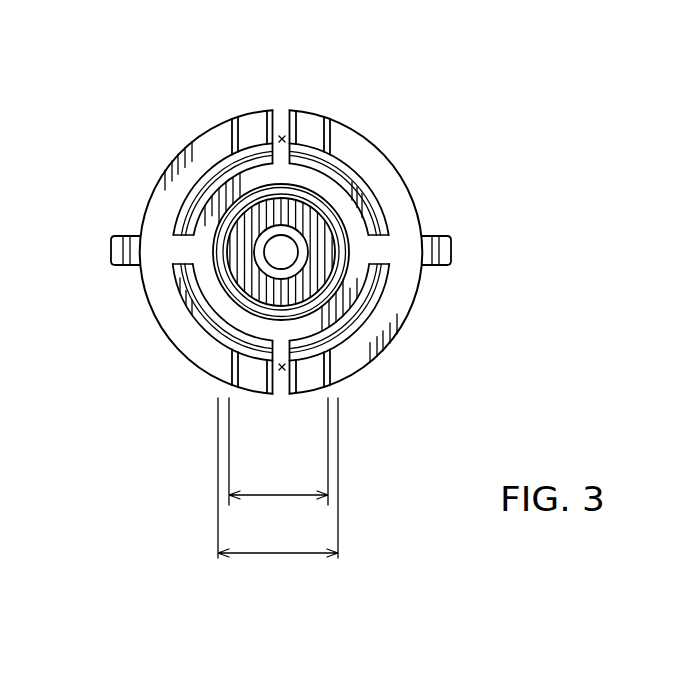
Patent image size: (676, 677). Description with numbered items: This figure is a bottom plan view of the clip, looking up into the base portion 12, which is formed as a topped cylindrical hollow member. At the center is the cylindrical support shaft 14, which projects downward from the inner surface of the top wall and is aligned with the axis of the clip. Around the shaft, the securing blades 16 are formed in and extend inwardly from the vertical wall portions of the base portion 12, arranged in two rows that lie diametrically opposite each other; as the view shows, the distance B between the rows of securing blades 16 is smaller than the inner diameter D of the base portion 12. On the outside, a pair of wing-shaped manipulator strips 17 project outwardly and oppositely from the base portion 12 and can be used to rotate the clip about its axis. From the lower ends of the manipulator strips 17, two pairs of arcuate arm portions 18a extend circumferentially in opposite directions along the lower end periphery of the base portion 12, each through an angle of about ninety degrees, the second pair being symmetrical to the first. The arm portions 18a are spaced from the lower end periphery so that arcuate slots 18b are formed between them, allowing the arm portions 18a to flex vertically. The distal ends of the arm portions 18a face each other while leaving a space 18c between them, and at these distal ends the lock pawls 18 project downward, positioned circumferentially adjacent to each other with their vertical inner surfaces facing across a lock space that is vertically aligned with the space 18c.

The base portion 12 is at (203, 201).
The support shaft 14 is at (300, 226).
The securing blades 16 is at (221, 252).
The manipulator strips 17 is at (118, 246).
The lock pawls 18 is at (307, 125).
The arm portions 18a is at (200, 148).
The arcuate slots 18b is at (334, 146).
The space 18c is at (286, 138).
The distance between the rows of securing blades B is at (278, 464).
The inner diameter of the base portion D is at (278, 492).